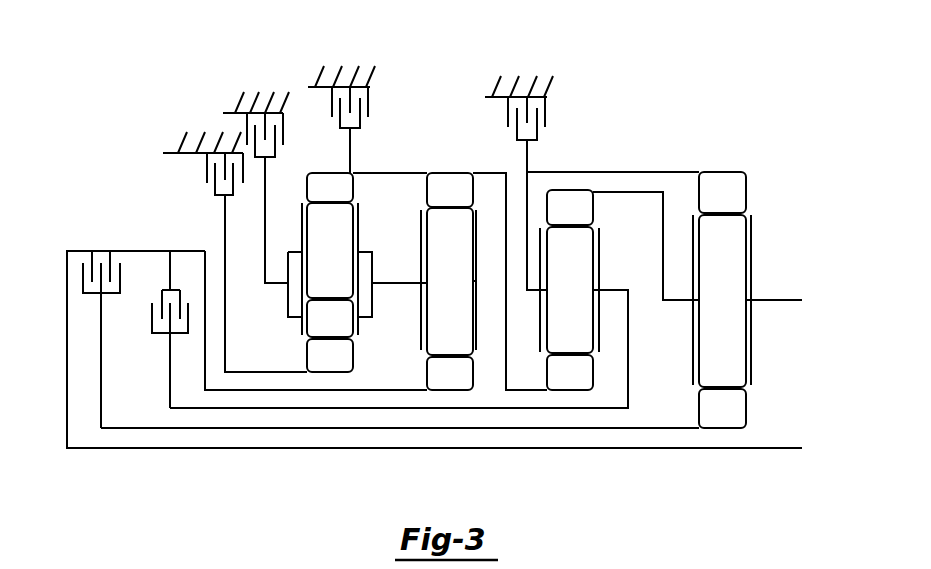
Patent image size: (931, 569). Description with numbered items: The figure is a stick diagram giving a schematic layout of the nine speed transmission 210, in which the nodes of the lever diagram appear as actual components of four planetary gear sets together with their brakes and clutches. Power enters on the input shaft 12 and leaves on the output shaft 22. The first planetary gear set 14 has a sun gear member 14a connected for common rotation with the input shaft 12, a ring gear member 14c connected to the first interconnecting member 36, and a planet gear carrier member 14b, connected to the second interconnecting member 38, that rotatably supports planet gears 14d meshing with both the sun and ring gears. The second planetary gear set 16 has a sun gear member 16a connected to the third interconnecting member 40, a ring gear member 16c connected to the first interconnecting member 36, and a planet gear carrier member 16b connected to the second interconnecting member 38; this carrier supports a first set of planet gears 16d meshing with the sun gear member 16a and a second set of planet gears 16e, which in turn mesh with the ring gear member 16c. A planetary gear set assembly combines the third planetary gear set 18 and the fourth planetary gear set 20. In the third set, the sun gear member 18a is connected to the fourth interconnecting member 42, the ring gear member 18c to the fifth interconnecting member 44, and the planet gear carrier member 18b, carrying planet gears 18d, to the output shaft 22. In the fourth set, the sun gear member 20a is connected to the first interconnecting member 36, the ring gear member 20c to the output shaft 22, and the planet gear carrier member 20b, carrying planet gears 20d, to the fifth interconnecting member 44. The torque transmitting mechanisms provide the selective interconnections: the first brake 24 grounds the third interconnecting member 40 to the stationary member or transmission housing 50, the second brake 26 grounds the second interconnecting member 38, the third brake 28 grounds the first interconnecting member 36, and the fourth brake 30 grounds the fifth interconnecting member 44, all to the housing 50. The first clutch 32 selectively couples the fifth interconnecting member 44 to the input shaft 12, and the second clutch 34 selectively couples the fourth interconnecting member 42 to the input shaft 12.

The input member or shaft 12 is at (378, 390).
The first planetary gear set 14 is at (426, 326).
The sun gear member 14a is at (458, 383).
The planet gear carrier member 14b is at (420, 314).
The ring gear member 14c is at (458, 199).
The planet gears 14d is at (458, 293).
The second planetary gear set 16 is at (346, 331).
The sun gear member 16a is at (338, 365).
The planet gear carrier member 16b is at (338, 197).
The ring gear member 16c is at (360, 240).
The first set of planet gears 16d is at (338, 328).
The second set of planet gears 16e is at (338, 260).
The third planetary gear set 18 is at (699, 336).
The sun gear member 18a is at (730, 419).
The planet gear carrier member 18b is at (693, 346).
The ring gear member 18c is at (730, 203).
The planet gears 18d is at (730, 311).
The fourth planetary gear set 20 is at (572, 334).
The sun gear member 20a is at (578, 382).
The planet gear carrier member 20b is at (600, 246).
The ring gear member 20c is at (578, 217).
The planet gears 20d is at (578, 301).
The output shaft or member 22 is at (643, 192).
The first brake 24 is at (207, 169).
The second brake 26 is at (224, 113).
The third brake 28 is at (370, 100).
The fourth brake 30 is at (546, 110).
The first clutch 32 is at (152, 318).
The second clutch 34 is at (83, 277).
The first shaft or interconnecting member 36 is at (418, 172).
The second shaft or interconnecting member 38 is at (264, 230).
The third shaft or interconnecting member 40 is at (225, 213).
The fourth shaft or interconnecting member 42 is at (612, 430).
The fifth shaft or interconnecting member 44 is at (608, 172).
The stationary member or transmission housing 50 is at (163, 151).
The nine speed transmission 210 is at (676, 91).